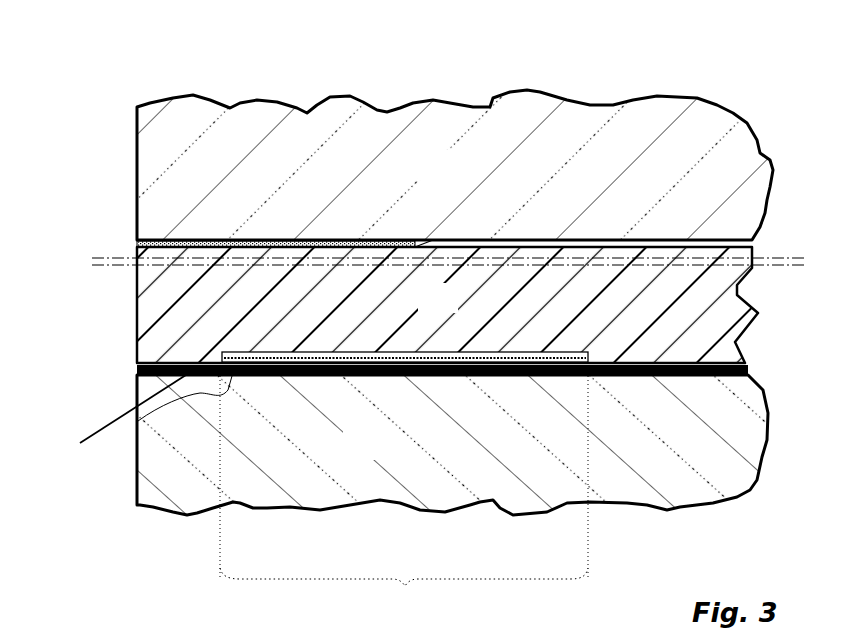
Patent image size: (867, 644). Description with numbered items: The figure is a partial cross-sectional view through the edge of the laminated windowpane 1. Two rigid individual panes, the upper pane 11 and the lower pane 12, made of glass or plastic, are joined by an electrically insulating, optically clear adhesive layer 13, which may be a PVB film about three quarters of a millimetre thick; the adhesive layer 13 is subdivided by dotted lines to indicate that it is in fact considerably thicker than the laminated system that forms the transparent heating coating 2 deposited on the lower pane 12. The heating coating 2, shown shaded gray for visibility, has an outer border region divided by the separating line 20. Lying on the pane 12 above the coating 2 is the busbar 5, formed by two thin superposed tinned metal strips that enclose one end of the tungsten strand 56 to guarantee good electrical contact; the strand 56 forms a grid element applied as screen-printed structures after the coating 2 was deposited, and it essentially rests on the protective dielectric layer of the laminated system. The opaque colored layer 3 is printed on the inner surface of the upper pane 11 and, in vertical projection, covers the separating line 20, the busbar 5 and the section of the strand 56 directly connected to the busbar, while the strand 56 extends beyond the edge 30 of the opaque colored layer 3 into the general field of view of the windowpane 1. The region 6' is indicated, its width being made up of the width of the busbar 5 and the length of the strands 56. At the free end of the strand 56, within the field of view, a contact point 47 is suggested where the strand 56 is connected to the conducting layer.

The windowpane 1 is at (127, 86).
The transparent heating coating 2 is at (137, 372).
The opaque colored layer 3 is at (137, 243).
The busbar 5 is at (130, 416).
The region 6' is at (404, 595).
The outer pane 11 is at (452, 177).
The lower pane 12 is at (377, 457).
The adhesive layer 13 is at (452, 310).
The separating line 20 is at (181, 355).
The edge of the opaque colored layer 30 is at (433, 238).
The contact point 47 is at (572, 376).
The strand 56 is at (484, 378).